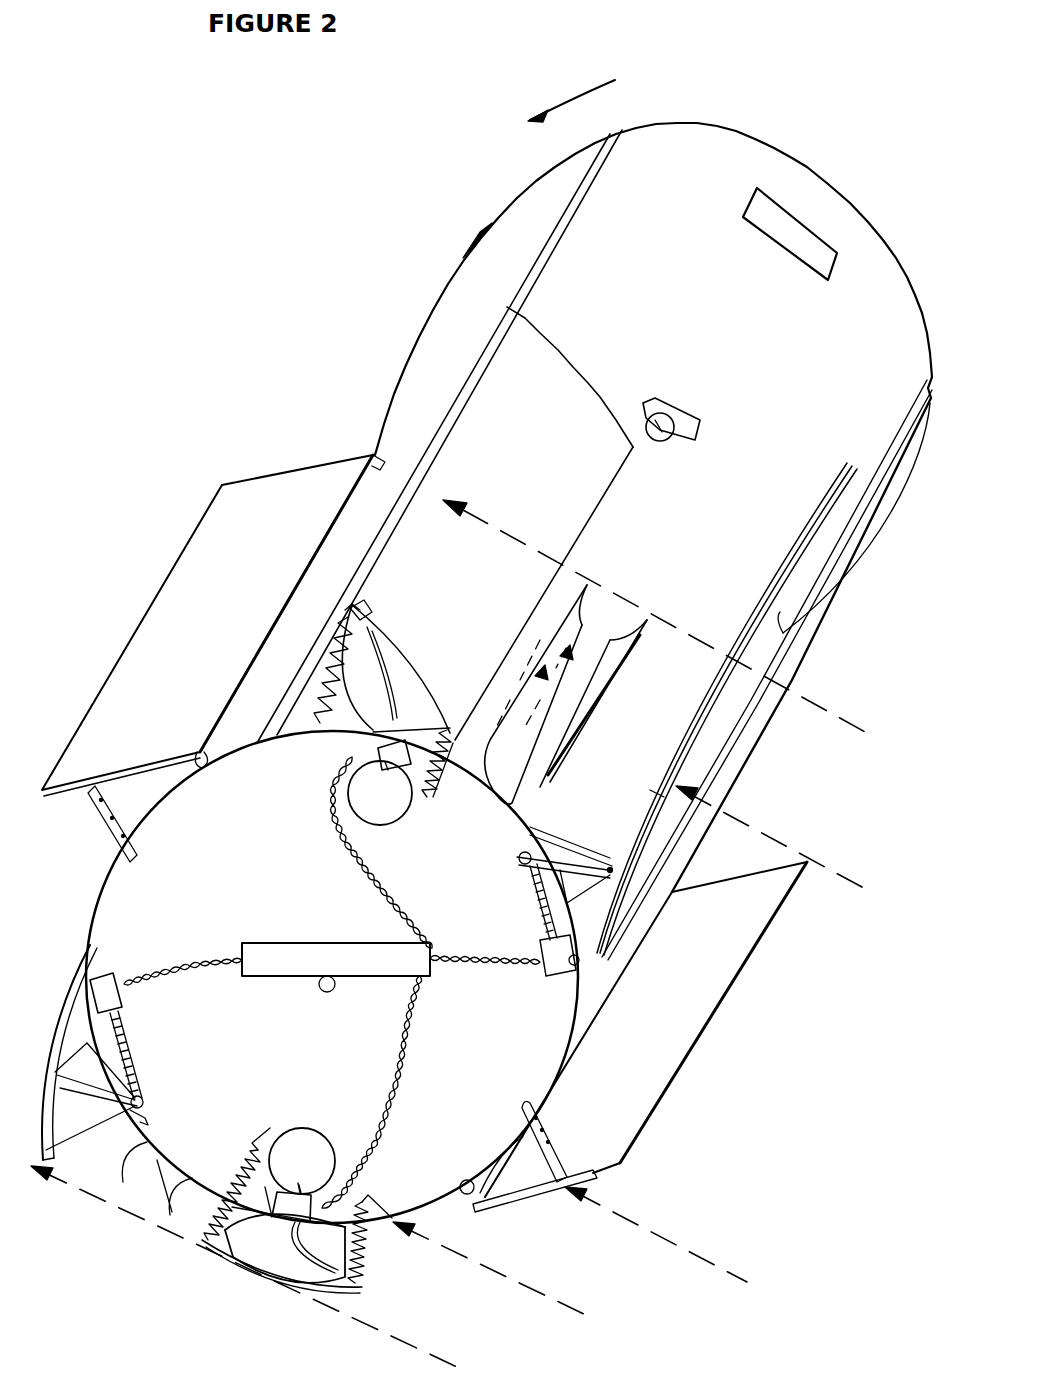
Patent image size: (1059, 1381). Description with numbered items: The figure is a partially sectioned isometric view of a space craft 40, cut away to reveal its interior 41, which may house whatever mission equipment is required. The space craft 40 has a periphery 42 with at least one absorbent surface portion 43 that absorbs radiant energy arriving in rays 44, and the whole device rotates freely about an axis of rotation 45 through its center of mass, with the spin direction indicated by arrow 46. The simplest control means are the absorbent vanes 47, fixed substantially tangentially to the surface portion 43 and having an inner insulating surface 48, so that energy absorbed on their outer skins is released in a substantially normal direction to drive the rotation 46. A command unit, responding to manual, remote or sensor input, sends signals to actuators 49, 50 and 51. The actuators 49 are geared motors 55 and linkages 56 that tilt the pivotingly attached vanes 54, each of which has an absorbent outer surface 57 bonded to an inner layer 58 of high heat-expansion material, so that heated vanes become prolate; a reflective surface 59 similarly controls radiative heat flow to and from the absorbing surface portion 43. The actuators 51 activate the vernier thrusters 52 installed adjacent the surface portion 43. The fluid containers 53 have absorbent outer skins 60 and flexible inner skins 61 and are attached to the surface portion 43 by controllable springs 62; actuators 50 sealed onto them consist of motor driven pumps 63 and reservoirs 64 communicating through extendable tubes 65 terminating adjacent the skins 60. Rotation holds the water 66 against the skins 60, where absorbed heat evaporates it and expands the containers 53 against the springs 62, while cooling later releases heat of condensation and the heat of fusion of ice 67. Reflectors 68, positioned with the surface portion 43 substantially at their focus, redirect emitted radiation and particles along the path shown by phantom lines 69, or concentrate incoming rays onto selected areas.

The space craft 40 is at (427, 372).
The interior 41 is at (150, 888).
The periphery 42 is at (352, 455).
The absorbent surface portion 43 is at (705, 175).
The rays 44 is at (865, 735).
The axis of rotation 45 is at (328, 992).
The arrow indicating rotation 46 is at (574, 85).
The absorbent vanes 47 is at (200, 560).
The inner insulating surface 48 is at (752, 878).
The actuators 49 is at (130, 1065).
The actuators 50 is at (350, 762).
The actuators 51 is at (658, 442).
The vernier thrusters 52 is at (658, 393).
The fluid containers 53 is at (505, 395).
The pivotingly attached vanes 54 is at (790, 628).
The geared motors 55 is at (93, 952).
The linkages 56 is at (132, 1115).
The absorbent outer surface 57 is at (727, 713).
The inner layer 58 is at (717, 697).
The reflective surface 59 is at (200, 778).
The absorbent outer skins 60 is at (240, 1256).
The flexible inner skins 61 is at (430, 730).
The controllable springs 62 is at (155, 1205).
The motor driven pumps 63 is at (312, 1198).
The reservoirs 64 is at (300, 1148).
The extendable tubes 65 is at (393, 680).
The water 66 is at (358, 615).
The ice 67 is at (293, 1273).
The reflectors 68 is at (572, 725).
The phantom lines 69 is at (522, 712).